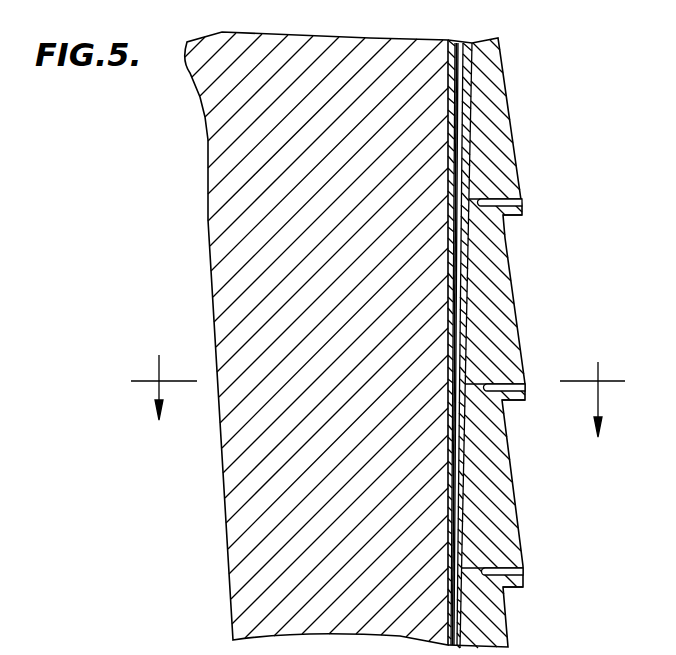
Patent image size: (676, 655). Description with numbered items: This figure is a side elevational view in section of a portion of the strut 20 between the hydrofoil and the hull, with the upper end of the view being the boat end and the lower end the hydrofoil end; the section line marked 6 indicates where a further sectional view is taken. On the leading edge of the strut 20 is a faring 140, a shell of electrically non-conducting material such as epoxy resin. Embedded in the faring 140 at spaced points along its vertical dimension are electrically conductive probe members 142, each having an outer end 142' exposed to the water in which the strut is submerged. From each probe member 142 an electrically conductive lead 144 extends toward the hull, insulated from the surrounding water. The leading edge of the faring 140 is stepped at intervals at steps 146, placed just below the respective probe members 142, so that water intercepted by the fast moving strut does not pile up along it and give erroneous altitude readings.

The strut 20 is at (208, 118).
The faring 140 is at (513, 283).
The probe member 142 is at (510, 363).
The outer end 142' is at (524, 386).
The lead 144 is at (473, 108).
The step 146 is at (510, 215).
The section line 6- 6 is at (378, 385).